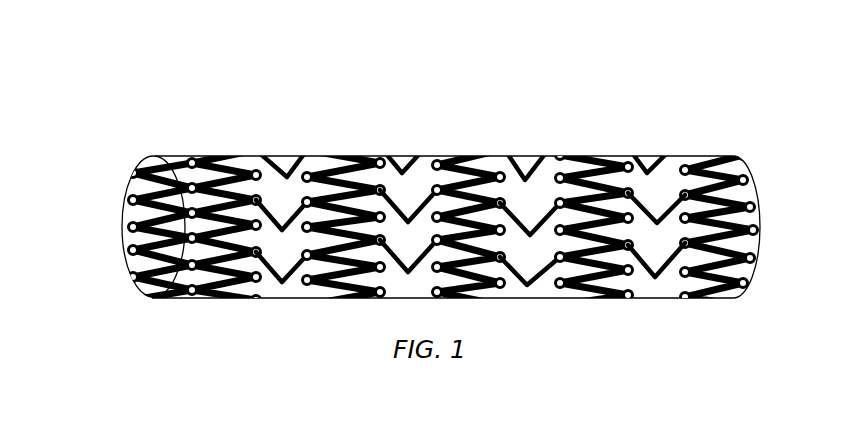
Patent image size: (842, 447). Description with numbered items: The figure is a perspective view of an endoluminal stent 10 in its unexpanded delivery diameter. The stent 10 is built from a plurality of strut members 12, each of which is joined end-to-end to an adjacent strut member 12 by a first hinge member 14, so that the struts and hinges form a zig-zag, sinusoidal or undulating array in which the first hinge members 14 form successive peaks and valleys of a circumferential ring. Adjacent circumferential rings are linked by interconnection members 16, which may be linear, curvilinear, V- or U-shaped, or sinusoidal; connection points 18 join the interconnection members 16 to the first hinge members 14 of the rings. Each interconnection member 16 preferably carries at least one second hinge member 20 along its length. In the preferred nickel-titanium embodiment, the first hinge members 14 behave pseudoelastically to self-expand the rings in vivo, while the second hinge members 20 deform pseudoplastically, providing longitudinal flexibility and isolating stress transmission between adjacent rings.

The endoluminal stent 10 is at (738, 66).
The strut member 12 is at (218, 170).
The first hinge member 14 is at (452, 172).
The interconnection member 16 is at (302, 172).
The connection point 18 is at (648, 166).
The second hinge member 20 is at (519, 283).